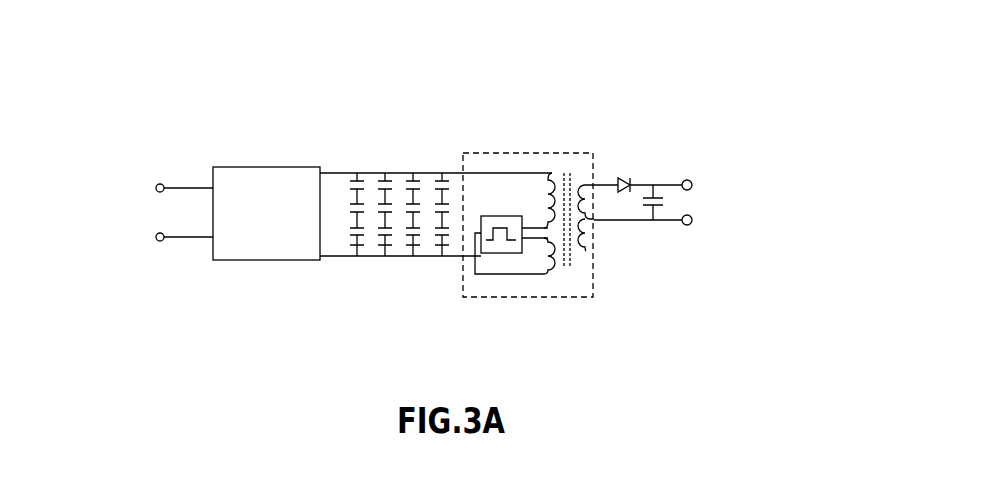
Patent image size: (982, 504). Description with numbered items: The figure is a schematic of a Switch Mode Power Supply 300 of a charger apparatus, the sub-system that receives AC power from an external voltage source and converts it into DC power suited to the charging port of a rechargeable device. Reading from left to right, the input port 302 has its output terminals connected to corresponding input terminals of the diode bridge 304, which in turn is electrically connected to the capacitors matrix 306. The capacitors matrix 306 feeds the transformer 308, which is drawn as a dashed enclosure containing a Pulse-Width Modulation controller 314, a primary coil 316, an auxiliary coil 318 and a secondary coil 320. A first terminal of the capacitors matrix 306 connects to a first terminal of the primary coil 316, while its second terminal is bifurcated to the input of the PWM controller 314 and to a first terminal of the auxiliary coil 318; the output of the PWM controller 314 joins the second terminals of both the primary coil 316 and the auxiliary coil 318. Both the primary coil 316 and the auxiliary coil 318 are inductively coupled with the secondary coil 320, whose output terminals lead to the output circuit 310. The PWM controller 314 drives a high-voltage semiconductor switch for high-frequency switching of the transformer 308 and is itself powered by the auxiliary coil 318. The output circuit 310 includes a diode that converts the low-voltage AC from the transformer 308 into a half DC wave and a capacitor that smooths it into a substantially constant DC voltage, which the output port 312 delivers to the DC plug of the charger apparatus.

The Switch Mode Power Supply 300 is at (332, 82).
The input port 302 is at (135, 211).
The diode bridge 304 is at (265, 262).
The capacitors matrix 306 is at (400, 258).
The transformer 308 is at (462, 163).
The output circuit 310 is at (649, 170).
The output port 312 is at (710, 205).
The Pulse-Width Modulation controller 314 is at (502, 254).
The primary coil 316 is at (552, 172).
The auxiliary coil 318 is at (550, 268).
The secondary coil 320 is at (585, 250).